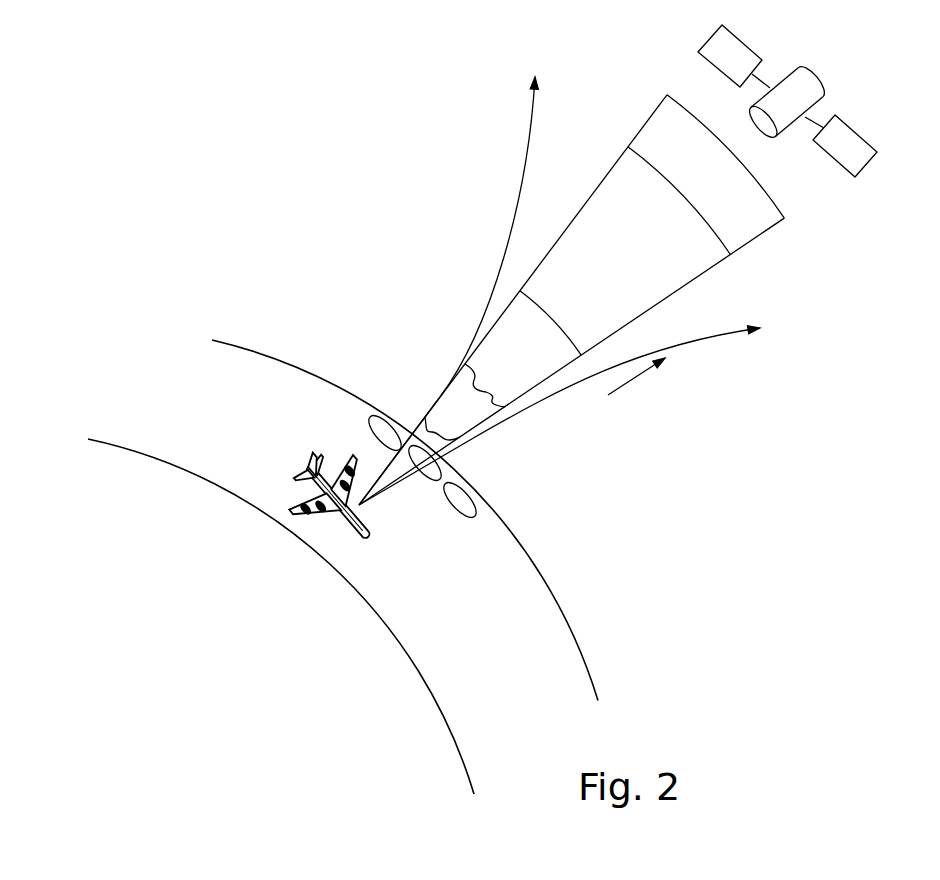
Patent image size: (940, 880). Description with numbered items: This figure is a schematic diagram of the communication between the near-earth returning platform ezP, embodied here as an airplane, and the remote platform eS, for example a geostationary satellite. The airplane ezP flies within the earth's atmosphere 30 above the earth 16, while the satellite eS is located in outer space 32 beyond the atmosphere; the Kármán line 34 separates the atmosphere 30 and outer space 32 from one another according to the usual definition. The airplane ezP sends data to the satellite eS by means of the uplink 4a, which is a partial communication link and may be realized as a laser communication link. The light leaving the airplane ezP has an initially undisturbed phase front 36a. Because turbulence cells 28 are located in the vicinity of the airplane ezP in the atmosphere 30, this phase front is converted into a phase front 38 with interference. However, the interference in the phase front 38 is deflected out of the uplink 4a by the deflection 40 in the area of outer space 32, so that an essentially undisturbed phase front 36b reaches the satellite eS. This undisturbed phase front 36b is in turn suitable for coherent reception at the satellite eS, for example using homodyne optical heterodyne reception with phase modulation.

The remote platform eS is at (815, 73).
The essentially undisturbed phase front 36b is at (737, 232).
The initially undisturbed phase front 36a is at (402, 482).
The deflection 40 is at (525, 165).
The uplink 4a is at (638, 378).
The phase front with interference 38 is at (460, 437).
The turbulence cells 28 is at (488, 503).
The near-earth returning platform ezP is at (347, 520).
The earth 16 is at (281, 616).
The earth's atmosphere 30 is at (491, 652).
The outer space 32 is at (592, 600).
The Kármán line 34 is at (587, 663).